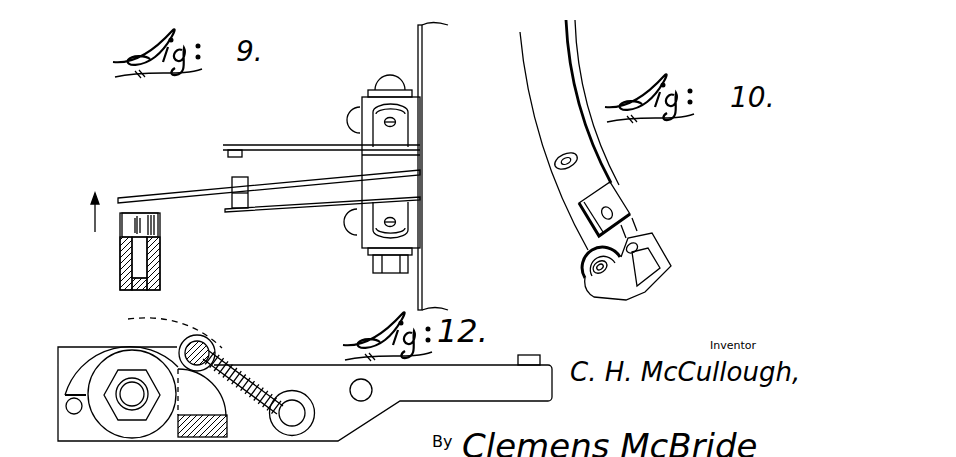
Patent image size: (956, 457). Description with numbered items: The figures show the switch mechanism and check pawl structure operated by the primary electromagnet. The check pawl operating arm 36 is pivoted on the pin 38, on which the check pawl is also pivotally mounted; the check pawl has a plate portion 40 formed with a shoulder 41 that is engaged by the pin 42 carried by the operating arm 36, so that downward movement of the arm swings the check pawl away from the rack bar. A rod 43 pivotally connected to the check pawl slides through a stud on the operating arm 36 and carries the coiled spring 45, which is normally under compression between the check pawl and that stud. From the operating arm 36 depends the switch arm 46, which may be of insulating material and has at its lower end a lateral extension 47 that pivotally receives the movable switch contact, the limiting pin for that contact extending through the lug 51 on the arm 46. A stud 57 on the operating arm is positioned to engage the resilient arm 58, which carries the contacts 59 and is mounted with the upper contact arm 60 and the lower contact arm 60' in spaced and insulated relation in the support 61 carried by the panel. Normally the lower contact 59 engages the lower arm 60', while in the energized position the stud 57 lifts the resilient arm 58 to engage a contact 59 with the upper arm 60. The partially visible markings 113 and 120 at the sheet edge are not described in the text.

In FIG. 9, the check pawl operating arm 36 is at (160, 284).
In FIG. 12, the check pawl operating arm 36 is at (345, 423).
In FIG. 12, the pivot pin 38 is at (130, 393).
In FIG. 12, the plate portion 40 is at (100, 392).
In FIG. 12, the shoulder 41 is at (73, 393).
In FIG. 12, the pin 42 is at (72, 408).
In FIG. 12, the rod 43 is at (272, 395).
In FIG. 12, the coiled spring 45 is at (237, 363).
In FIG. 10, the switch arm 46 is at (578, 135).
In FIG. 10, the lateral extension 47 is at (662, 253).
In FIG. 10, the lug 51 is at (613, 203).
In FIG. 9, the stud 57 is at (160, 228).
In FIG. 12, the stud 57 is at (537, 355).
In FIG. 9, the resilient arm 58 is at (157, 193).
In FIG. 9, the contacts 59 is at (280, 147).
In FIG. 9, the upper contact arm 60 is at (245, 153).
In FIG. 9, the lower contact arm 60' is at (322, 228).
In FIG. 9, the support 61 is at (367, 107).
In FIG. 9, the member 113 is at (481, 5).
In FIG. 9, the wall 120 is at (441, 5).